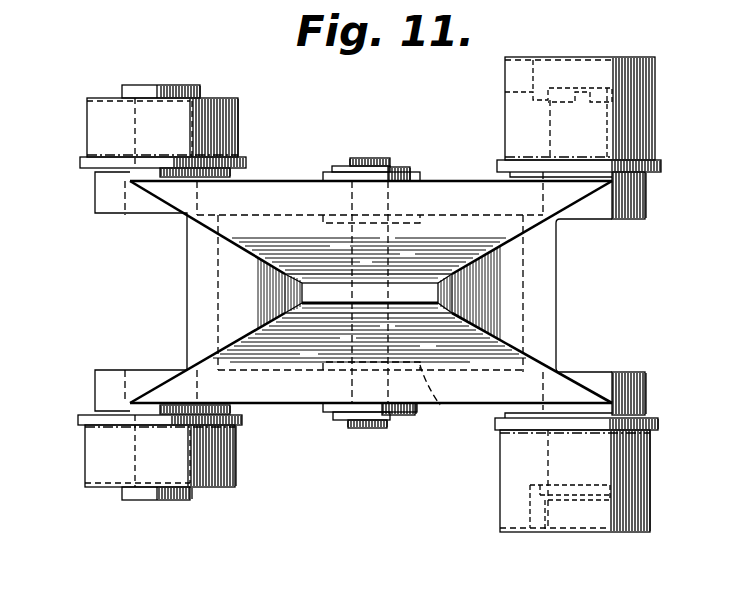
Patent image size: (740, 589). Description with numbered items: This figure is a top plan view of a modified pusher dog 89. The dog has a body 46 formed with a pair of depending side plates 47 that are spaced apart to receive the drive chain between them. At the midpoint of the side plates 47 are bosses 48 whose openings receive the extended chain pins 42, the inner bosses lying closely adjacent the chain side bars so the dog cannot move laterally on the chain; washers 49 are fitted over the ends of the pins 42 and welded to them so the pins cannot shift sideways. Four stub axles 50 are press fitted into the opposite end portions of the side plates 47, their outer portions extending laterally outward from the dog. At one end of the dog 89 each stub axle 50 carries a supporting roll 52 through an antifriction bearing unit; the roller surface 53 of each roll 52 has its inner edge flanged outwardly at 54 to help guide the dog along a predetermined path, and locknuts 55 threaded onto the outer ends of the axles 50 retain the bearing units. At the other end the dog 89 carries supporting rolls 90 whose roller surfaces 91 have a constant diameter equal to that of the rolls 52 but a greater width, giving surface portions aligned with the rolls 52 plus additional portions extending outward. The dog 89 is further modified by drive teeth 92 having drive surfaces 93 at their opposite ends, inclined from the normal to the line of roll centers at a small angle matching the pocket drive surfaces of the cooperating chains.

The extended chain pin 42 is at (370, 158).
The body 46 is at (455, 195).
The side plate 47 is at (285, 181).
The boss 48 is at (325, 172).
The washer 49 is at (403, 167).
The stub axle 50 is at (135, 122).
The supporting roll 52 is at (228, 98).
The roller surface 53 is at (240, 131).
The flange 54 is at (82, 160).
The locknut 55 is at (124, 90).
The pusher dog 89 is at (560, 298).
The supporting roll 90 is at (658, 131).
The roller surface 91 is at (656, 93).
The drive tooth 92 is at (400, 276).
The drive surface 93 is at (288, 283).